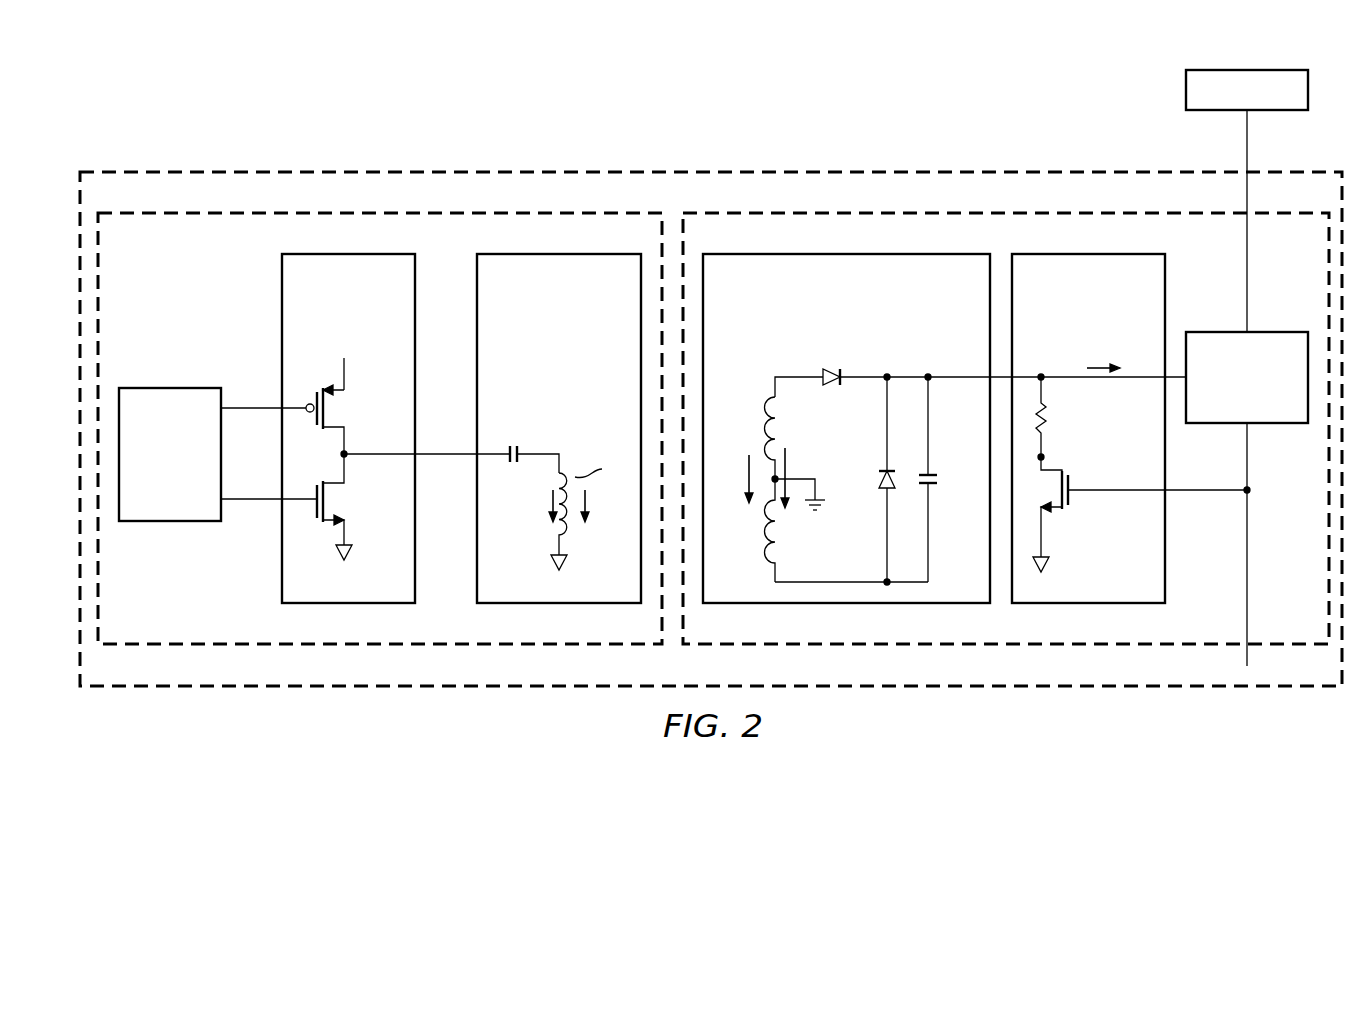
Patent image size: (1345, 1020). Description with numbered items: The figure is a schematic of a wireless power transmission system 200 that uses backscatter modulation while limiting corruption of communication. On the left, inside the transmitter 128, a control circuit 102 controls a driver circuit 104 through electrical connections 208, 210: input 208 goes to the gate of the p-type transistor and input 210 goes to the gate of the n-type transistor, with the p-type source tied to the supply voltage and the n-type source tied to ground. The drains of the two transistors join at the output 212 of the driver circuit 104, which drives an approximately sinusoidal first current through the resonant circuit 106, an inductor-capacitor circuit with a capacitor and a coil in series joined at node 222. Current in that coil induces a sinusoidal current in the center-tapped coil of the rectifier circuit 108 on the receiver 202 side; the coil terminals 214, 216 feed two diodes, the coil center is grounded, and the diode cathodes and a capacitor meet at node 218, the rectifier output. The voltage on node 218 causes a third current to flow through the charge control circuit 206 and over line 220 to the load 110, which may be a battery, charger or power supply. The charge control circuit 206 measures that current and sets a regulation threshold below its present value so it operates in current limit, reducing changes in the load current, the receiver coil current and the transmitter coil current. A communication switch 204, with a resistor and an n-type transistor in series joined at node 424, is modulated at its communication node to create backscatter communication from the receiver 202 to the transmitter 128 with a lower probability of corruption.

The control circuit 102 is at (168, 388).
The driver circuit 104 is at (331, 296).
The resonant circuit 106 is at (540, 296).
The rectifier circuit 108 is at (827, 296).
The load 110 is at (1257, 70).
The transmitter 128 is at (152, 594).
The wireless power transmission system 200 is at (518, 165).
The receiver 202 is at (1269, 594).
The communication switch 204 is at (1069, 296).
The charge control circuit 206 is at (1272, 424).
The electrical connection 208 is at (253, 408).
The electrical connection 210 is at (255, 500).
The output 212 is at (455, 454).
The receiver coil top node 214 is at (800, 377).
The receiver bottom return node 216 is at (838, 582).
The node 218 is at (861, 377).
The load supply line 220 is at (1249, 305).
The transmitter tank node between C1 and L1 222 is at (546, 454).
The R1 and NFET2 intermediate node 424 is at (1043, 457).